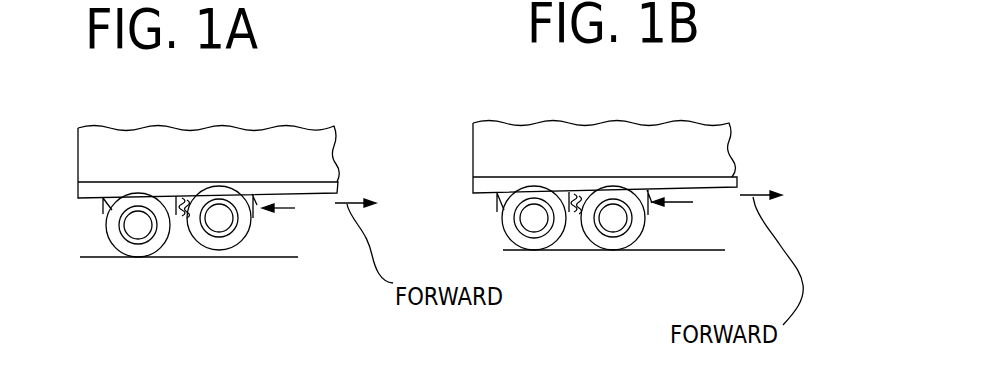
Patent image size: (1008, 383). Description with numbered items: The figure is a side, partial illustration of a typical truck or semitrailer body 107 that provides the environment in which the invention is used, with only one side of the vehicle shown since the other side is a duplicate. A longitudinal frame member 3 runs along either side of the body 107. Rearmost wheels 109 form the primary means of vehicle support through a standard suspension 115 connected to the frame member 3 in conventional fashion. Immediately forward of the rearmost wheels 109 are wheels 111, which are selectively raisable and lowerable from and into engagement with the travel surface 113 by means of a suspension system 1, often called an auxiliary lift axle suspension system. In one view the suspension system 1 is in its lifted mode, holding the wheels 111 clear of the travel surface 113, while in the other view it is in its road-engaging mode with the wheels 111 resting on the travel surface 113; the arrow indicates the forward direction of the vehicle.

In FIG. 1A, the suspension system 1 is at (297, 209).
In FIG. 1B, the suspension system 1 is at (680, 203).
In FIG. 1A, the longitudinal frame member 3 is at (336, 183).
In FIG. 1B, the longitudinal frame member 3 is at (737, 180).
In FIG. 1A, the truck or semitrailer body 107 is at (223, 138).
In FIG. 1B, the truck or semitrailer body 107 is at (583, 122).
In FIG. 1A, the rearmost wheels 109 is at (113, 233).
In FIG. 1B, the rearmost wheels 109 is at (511, 228).
In FIG. 1A, the wheels 111 is at (250, 227).
In FIG. 1B, the wheels 111 is at (643, 229).
In FIG. 1A, the travel surface 113 is at (298, 257).
In FIG. 1B, the travel surface 113 is at (713, 249).
In FIG. 1A, the standard suspension 115 is at (105, 202).
In FIG. 1B, the standard suspension 115 is at (500, 200).